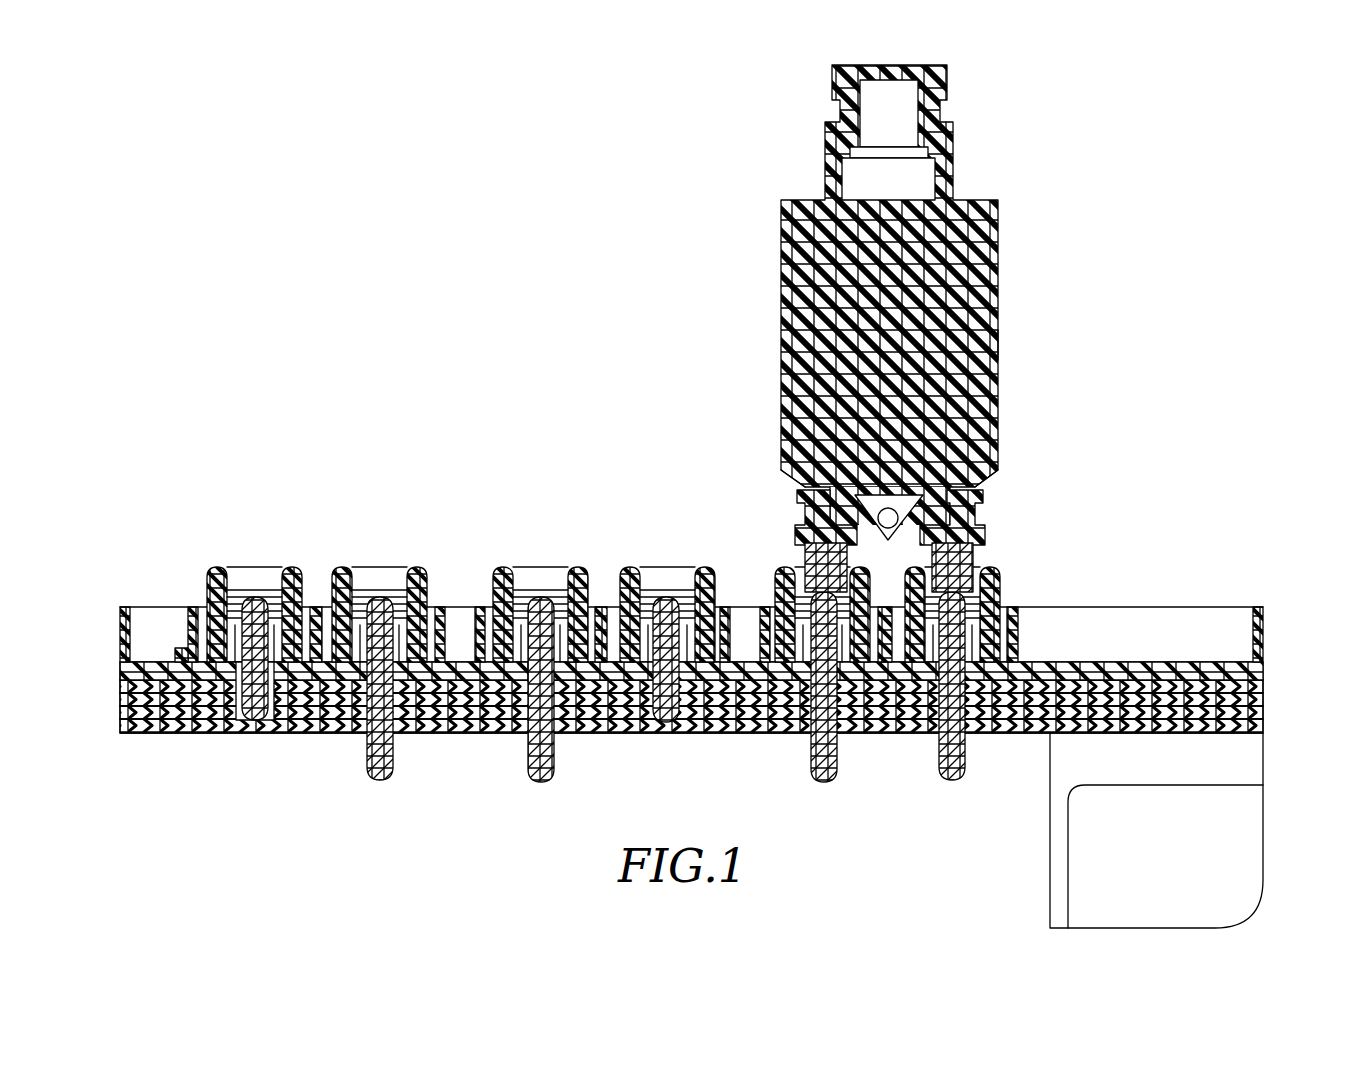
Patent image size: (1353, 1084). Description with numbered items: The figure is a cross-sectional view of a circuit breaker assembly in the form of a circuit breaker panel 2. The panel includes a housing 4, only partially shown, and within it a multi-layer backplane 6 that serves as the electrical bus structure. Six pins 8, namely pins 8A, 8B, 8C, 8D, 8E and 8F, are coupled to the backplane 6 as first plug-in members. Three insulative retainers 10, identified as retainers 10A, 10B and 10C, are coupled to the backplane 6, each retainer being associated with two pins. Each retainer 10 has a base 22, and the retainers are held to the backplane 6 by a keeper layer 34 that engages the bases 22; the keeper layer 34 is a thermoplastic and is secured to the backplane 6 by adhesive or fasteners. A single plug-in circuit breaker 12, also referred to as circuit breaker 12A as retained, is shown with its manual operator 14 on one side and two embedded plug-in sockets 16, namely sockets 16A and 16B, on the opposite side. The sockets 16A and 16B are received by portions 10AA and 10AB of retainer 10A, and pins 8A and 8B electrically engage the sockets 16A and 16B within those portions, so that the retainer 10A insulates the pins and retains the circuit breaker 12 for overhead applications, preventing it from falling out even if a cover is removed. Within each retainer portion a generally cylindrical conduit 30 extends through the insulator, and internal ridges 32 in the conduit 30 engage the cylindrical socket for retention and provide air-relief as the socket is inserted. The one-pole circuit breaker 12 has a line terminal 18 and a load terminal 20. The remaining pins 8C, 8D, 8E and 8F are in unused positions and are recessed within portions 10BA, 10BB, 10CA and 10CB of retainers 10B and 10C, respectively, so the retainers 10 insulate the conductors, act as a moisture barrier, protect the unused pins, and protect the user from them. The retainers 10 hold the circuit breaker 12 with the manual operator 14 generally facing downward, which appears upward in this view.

The circuit breaker panel 2 is at (613, 404).
The housing 4 is at (1282, 810).
The backplane 6 is at (704, 718).
The pins 8 is at (577, 659).
The pin 8A is at (805, 705).
The pin 8B is at (930, 705).
The pin 8C is at (522, 705).
The pin 8D is at (645, 715).
The pin 8E is at (225, 715).
The pin 8F is at (360, 728).
The insulative retainers 10 is at (588, 642).
The insulative retainer 10A is at (858, 662).
The insulative retainer 10B is at (567, 658).
The insulative retainer 10C is at (270, 656).
The portion of insulative retainer 10AA is at (785, 640).
The portion of insulative retainer 10AB is at (905, 640).
The portion of insulative retainer 10BA is at (505, 630).
The portion of insulative retainer 10BB is at (612, 650).
The portion of insulative retainer 10CA is at (203, 596).
The portion of insulative retainer 10CB is at (345, 630).
The circuit breaker 12 is at (919, 276).
The circuit breaker 12A is at (1000, 346).
The manual operator 14 is at (832, 80).
The sockets 16 is at (888, 517).
The socket 16A is at (835, 492).
The socket 16B is at (935, 482).
The line terminal 18 is at (810, 462).
The load terminal 20 is at (962, 460).
The base 22 is at (150, 673).
The conduit 30 is at (254, 700).
The internal ridges 32 is at (222, 610).
The keeper layer 34 is at (122, 632).